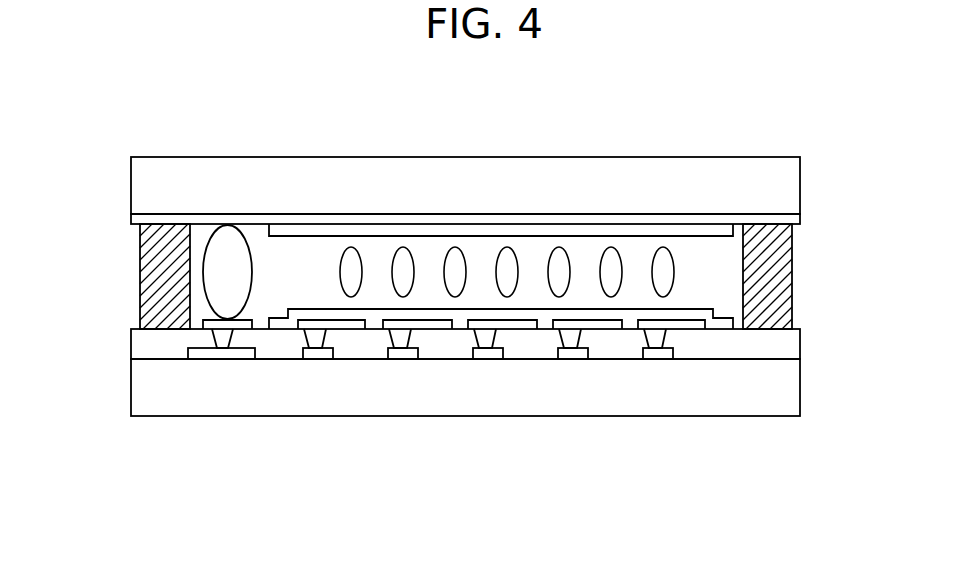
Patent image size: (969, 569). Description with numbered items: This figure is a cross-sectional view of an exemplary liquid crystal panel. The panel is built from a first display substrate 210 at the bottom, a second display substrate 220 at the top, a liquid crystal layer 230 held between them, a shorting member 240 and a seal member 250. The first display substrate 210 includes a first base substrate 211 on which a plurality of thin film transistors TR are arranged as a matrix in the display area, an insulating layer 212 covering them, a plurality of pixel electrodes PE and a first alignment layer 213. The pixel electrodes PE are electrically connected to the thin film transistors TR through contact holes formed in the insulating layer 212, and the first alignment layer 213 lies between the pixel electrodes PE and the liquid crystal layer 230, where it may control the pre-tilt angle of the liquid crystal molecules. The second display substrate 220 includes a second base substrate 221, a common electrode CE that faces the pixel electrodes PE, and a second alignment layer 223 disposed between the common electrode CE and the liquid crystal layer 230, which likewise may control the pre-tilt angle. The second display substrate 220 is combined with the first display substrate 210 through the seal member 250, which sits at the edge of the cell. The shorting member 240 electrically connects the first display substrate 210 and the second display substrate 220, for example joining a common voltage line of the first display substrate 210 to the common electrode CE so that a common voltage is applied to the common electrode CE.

The first display substrate 210 is at (131, 329).
The first base substrate 211 is at (800, 388).
The insulating layer 212 is at (800, 343).
The first alignment layer 213 is at (693, 316).
The second display substrate 220 is at (131, 157).
The second base substrate 221 is at (800, 183).
The second alignment layer 223 is at (631, 232).
The liquid crystal layer 230 is at (725, 277).
The shorting member 240 is at (227, 233).
The seal member 250 is at (145, 274).
The common electrode CE is at (800, 221).
The pixel electrode PE is at (349, 324).
The thin film transistor TR is at (313, 358).